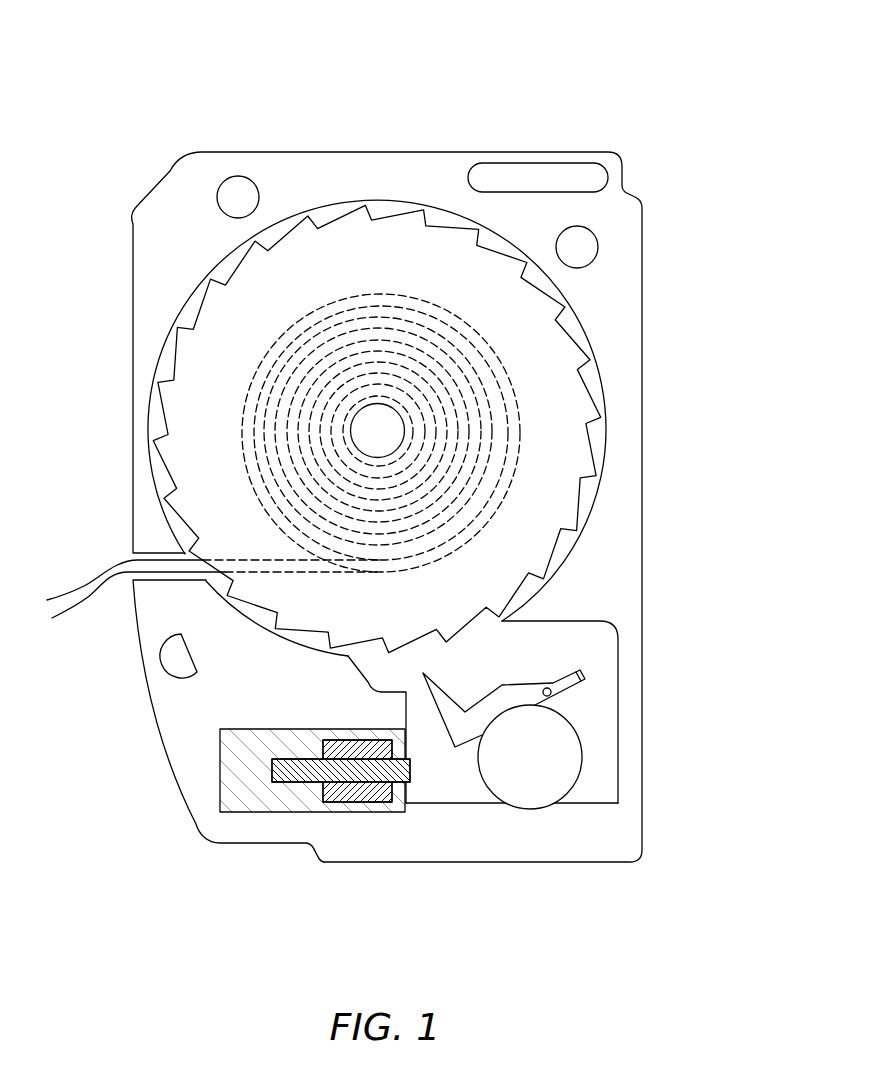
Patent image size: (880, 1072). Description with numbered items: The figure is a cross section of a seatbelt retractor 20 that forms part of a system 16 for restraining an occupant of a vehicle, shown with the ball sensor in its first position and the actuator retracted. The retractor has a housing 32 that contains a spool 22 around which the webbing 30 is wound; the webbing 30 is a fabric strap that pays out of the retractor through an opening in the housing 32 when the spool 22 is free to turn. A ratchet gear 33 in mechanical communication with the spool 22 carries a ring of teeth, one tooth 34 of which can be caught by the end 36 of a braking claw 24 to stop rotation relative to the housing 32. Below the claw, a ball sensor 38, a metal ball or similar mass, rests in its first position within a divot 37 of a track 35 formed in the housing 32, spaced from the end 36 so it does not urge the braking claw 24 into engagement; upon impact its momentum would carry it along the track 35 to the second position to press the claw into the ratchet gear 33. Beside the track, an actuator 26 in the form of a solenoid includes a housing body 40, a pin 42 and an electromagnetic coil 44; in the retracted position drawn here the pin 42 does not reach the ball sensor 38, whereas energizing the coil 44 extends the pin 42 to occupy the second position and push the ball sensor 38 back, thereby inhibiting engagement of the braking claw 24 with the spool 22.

The system 16 is at (149, 62).
The seatbelt retractor 20 is at (700, 148).
The spool 22 is at (373, 431).
The braking claw 24 is at (585, 677).
The actuator 26 is at (285, 813).
The webbing 30 is at (91, 590).
The housing 32 is at (143, 533).
The ratchet gear 33 is at (563, 400).
The tooth 34 is at (440, 635).
The track 35 is at (597, 803).
The end 36 is at (438, 693).
The divot 37 is at (530, 810).
The ball sensor 38 is at (550, 754).
The housing body 40 is at (220, 793).
The pin 42 is at (410, 768).
The electromagnetic coil 44 is at (357, 795).